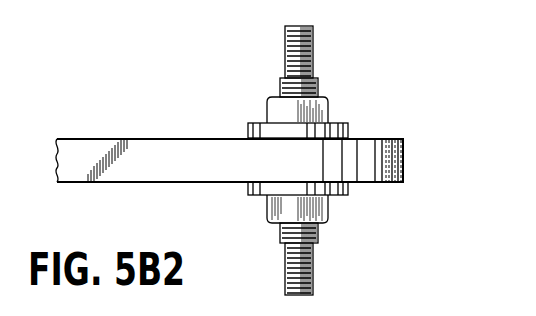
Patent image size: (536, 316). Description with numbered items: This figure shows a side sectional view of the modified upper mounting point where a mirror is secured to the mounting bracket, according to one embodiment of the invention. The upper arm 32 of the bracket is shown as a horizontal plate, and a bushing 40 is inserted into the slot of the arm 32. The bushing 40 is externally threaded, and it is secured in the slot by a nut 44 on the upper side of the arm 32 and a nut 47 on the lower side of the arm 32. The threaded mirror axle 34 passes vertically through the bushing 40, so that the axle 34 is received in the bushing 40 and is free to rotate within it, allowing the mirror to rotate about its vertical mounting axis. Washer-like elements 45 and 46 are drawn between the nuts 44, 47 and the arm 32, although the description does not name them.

The upper arm 32 is at (397, 155).
The threaded axle 34 is at (313, 45).
The bushing 40 is at (280, 83).
The nut 44 is at (277, 107).
The upper washer 45 is at (349, 127).
The lower washer 46 is at (349, 192).
The nut 47 is at (270, 215).